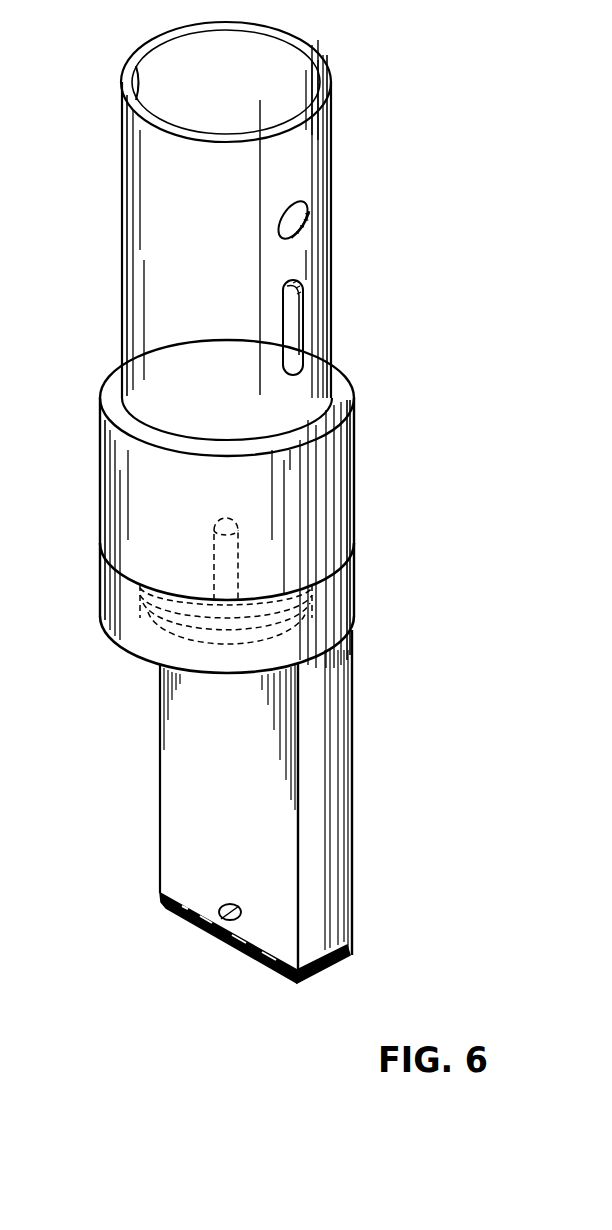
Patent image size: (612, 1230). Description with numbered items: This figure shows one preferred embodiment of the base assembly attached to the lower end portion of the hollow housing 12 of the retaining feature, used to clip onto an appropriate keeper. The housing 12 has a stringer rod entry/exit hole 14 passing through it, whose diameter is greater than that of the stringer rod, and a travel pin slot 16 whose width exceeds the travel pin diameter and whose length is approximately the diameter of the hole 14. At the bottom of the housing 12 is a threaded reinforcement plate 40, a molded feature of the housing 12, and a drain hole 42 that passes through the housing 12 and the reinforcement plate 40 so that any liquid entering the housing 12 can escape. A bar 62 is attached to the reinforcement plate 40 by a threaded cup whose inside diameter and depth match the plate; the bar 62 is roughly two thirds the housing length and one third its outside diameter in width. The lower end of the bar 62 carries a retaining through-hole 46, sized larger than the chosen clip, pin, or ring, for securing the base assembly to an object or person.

The hollow housing 12 is at (122, 172).
The stringer rod entry/exit hole 14 is at (305, 223).
The travel pin slot 16 is at (303, 321).
The reinforcement plate 40 is at (187, 645).
The drain hole 42 is at (214, 555).
The retaining through-hole 46 is at (221, 914).
The bar 62 is at (352, 779).